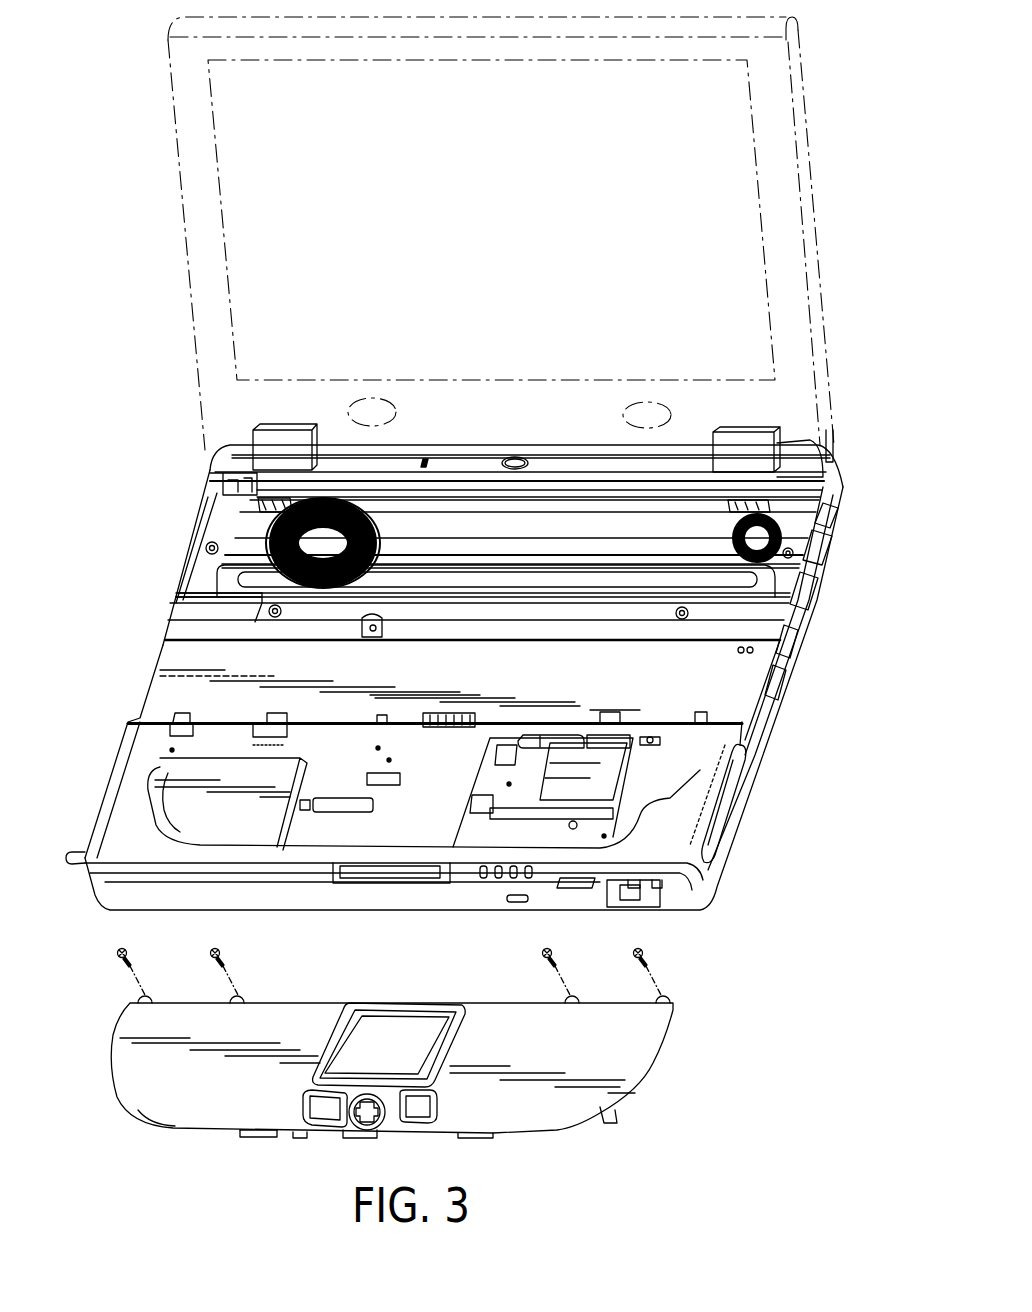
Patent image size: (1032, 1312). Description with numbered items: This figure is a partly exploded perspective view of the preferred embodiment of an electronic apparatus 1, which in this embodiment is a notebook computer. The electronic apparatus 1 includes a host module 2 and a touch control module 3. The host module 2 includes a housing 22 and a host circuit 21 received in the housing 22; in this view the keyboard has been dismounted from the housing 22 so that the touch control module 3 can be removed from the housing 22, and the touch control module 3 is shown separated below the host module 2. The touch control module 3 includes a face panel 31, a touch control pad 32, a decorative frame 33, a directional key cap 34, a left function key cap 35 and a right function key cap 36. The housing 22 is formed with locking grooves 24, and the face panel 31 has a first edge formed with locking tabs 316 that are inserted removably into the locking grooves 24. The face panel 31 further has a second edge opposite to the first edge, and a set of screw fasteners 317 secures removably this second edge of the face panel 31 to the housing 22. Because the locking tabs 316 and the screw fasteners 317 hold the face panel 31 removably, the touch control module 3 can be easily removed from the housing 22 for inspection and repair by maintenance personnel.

The electronic apparatus 1 is at (850, 462).
The host module 2 is at (803, 670).
The host circuit 21 is at (545, 735).
The housing 22 is at (698, 775).
The locking grooves 24 is at (155, 768).
The touch control module 3 is at (425, 1063).
The face panel 31 is at (623, 1047).
The touch control pad 32 is at (420, 1028).
The decorative frame 33 is at (347, 1017).
The directional key cap 34 is at (367, 1103).
The left function key cap 35 is at (303, 1097).
The right function key cap 36 is at (433, 1098).
The locking tabs 316 is at (608, 1123).
The screw fasteners 317 is at (223, 953).